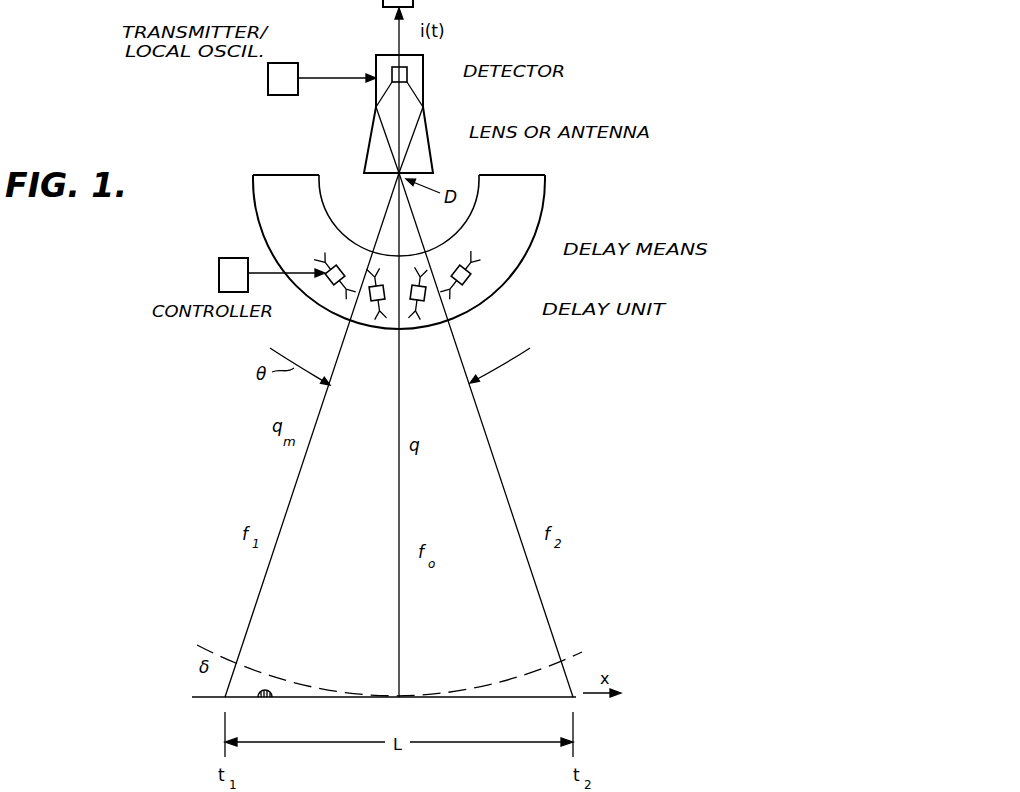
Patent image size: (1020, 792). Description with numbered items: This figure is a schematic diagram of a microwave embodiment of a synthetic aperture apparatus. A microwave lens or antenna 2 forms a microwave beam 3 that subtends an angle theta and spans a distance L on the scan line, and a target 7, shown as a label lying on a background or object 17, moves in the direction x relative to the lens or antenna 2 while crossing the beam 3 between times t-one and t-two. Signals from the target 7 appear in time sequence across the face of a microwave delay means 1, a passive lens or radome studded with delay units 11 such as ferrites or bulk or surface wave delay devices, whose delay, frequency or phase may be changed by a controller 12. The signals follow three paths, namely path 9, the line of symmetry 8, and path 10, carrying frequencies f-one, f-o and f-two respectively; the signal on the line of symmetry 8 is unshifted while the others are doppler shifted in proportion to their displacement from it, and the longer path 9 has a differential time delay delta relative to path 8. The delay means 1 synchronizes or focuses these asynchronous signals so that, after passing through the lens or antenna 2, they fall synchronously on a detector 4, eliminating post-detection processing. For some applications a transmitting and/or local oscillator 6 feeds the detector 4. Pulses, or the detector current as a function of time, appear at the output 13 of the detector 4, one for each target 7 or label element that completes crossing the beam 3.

The microwave delay means 1 is at (532, 246).
The microwave lens or antenna 2 is at (427, 135).
The microwave beam 3 is at (520, 373).
The detector 4 is at (407, 74).
The transmitting and/or local oscillator 6 is at (268, 77).
The target 7 is at (268, 690).
The line of symmetry 8 is at (399, 500).
The signal path 9 is at (293, 490).
The signal path 10 is at (498, 472).
The delay unit 11 is at (473, 270).
The controller 12 is at (219, 276).
The output of detector 13 is at (396, 31).
The background or object 17 is at (533, 698).